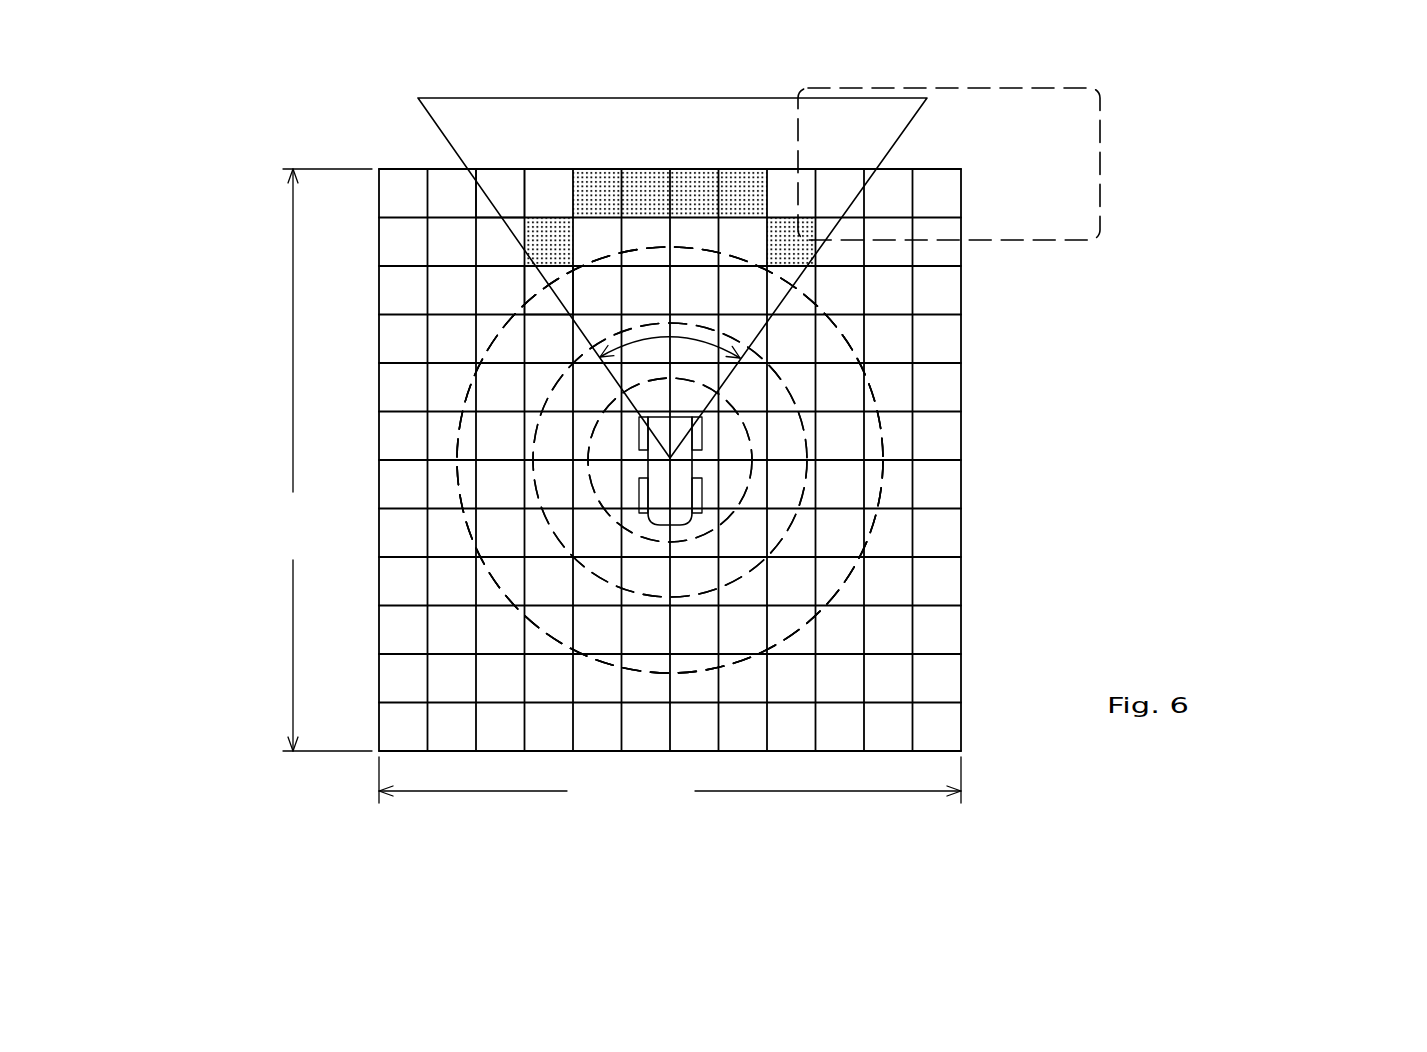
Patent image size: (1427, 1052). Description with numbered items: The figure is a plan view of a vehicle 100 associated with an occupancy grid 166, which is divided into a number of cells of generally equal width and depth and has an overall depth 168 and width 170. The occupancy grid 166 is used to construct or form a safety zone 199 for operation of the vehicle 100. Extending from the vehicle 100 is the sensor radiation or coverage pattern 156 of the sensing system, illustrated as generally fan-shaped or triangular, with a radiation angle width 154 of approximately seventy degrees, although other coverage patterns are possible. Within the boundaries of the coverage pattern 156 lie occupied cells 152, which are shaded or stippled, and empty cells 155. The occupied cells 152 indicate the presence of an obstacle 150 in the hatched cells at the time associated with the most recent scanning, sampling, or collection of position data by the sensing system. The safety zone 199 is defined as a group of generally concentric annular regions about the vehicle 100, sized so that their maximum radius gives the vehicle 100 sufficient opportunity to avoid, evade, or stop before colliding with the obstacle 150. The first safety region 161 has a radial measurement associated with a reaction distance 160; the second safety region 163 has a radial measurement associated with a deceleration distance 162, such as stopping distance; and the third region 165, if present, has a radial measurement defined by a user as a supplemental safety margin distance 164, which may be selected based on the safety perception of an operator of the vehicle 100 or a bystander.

The vehicle 100 is at (687, 490).
The obstacle 150 is at (1100, 155).
The occupied cells 152 is at (527, 237).
The radiation angle width 154 is at (705, 342).
The empty cells 155 is at (578, 302).
The coverage pattern 156 is at (490, 113).
The reaction distance 160 is at (732, 443).
The first safety region 161 is at (732, 522).
The deceleration distance 162 is at (777, 402).
The second safety region 163 is at (773, 565).
The safety margin distance 164 is at (828, 352).
The third region 165 is at (832, 618).
The occupancy grid 166 is at (347, 768).
The depth 168 is at (319, 460).
The width 170 is at (670, 780).
The safety zone 199 is at (845, 663).